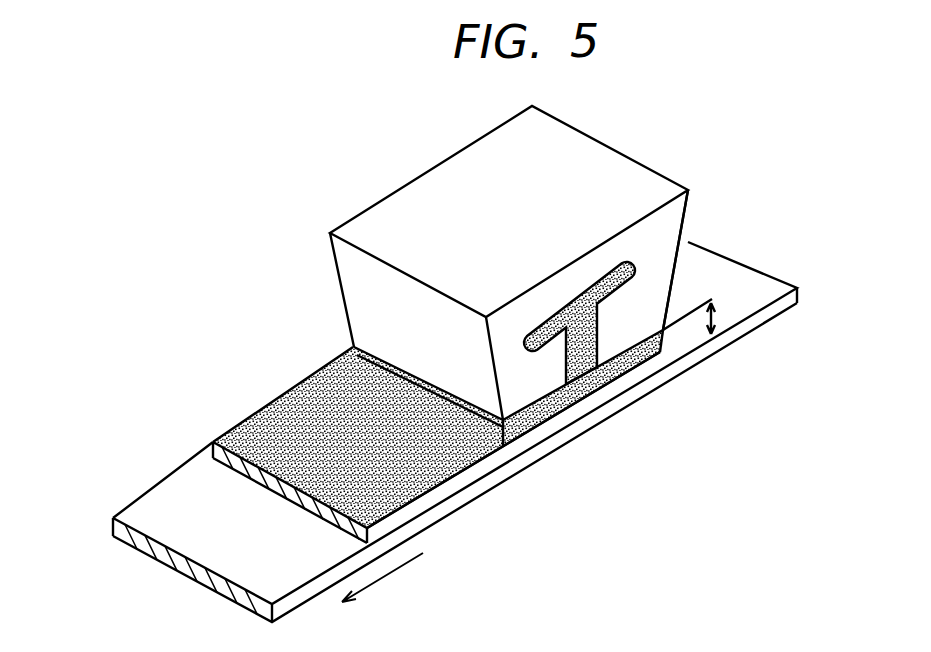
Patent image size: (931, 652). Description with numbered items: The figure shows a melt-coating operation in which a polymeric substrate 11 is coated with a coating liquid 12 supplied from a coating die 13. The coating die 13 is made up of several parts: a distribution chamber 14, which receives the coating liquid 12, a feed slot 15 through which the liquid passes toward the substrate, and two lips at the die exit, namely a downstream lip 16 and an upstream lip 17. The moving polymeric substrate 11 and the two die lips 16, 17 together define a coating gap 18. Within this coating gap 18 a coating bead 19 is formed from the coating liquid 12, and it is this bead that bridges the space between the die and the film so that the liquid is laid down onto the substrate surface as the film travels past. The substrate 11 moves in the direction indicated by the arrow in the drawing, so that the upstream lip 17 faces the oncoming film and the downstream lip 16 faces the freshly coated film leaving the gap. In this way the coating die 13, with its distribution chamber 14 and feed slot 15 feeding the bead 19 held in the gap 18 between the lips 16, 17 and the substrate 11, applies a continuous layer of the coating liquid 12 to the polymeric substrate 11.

The polymeric substrate 11 is at (175, 494).
The coating liquid 12 is at (287, 417).
The coating die 13 is at (390, 225).
The distribution chamber 14 is at (643, 268).
The feed slot 15 is at (586, 386).
The downstream lip 16 is at (525, 428).
The upstream lip 17 is at (657, 343).
The coating gap 18 is at (716, 318).
The coating bead 19 is at (550, 437).